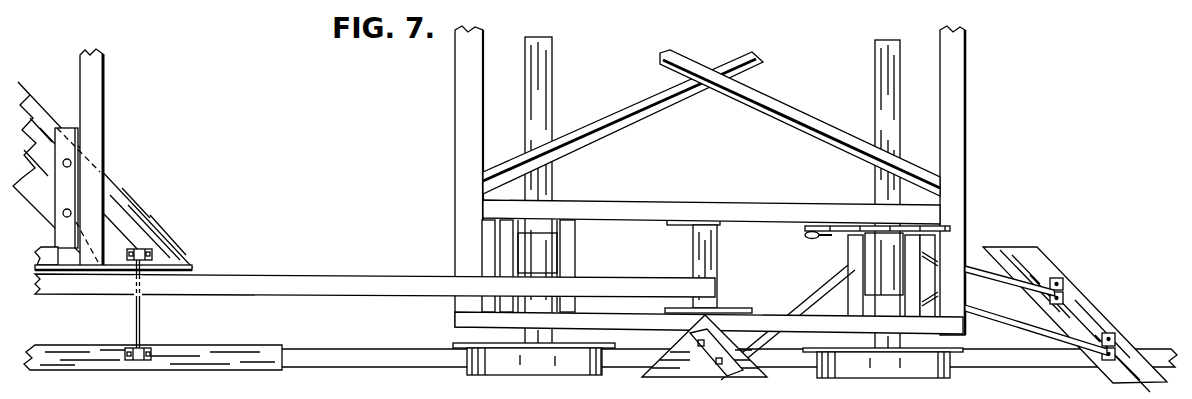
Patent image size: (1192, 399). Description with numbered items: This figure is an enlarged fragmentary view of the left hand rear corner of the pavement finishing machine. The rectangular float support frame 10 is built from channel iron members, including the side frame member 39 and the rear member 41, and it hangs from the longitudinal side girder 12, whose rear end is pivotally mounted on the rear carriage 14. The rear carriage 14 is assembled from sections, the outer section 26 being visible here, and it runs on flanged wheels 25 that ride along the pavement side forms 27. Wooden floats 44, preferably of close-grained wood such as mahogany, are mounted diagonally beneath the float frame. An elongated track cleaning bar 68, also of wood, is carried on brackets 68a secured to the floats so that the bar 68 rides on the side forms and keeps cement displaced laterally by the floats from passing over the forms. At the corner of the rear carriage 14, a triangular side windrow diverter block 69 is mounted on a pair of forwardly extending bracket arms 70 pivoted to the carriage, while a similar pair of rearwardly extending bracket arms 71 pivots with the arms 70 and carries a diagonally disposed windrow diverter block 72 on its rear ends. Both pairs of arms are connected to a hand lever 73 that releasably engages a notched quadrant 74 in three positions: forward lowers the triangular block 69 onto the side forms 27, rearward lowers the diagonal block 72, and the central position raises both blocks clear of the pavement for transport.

The float support frame 10 is at (110, 97).
The rear member 41 is at (90, 130).
The float 44 is at (117, 218).
The side frame member 39 is at (57, 256).
The bracket 68a is at (144, 323).
The track cleaning bar 68 is at (200, 356).
The side frame or girder 12 is at (323, 282).
The pavement side form 27 is at (399, 358).
The flanged wheel 25 is at (573, 366).
The triangular side windrow diverter block 69 is at (700, 367).
The hand lever 73 is at (807, 239).
The bracket arm 70 is at (833, 306).
The notched quadrant 74 is at (922, 224).
The bracket arm 71 is at (1004, 280).
The diagonal windrow diverter block 72 is at (1082, 311).
The rear carriage 14 is at (972, 96).
The outer section 26 is at (955, 137).